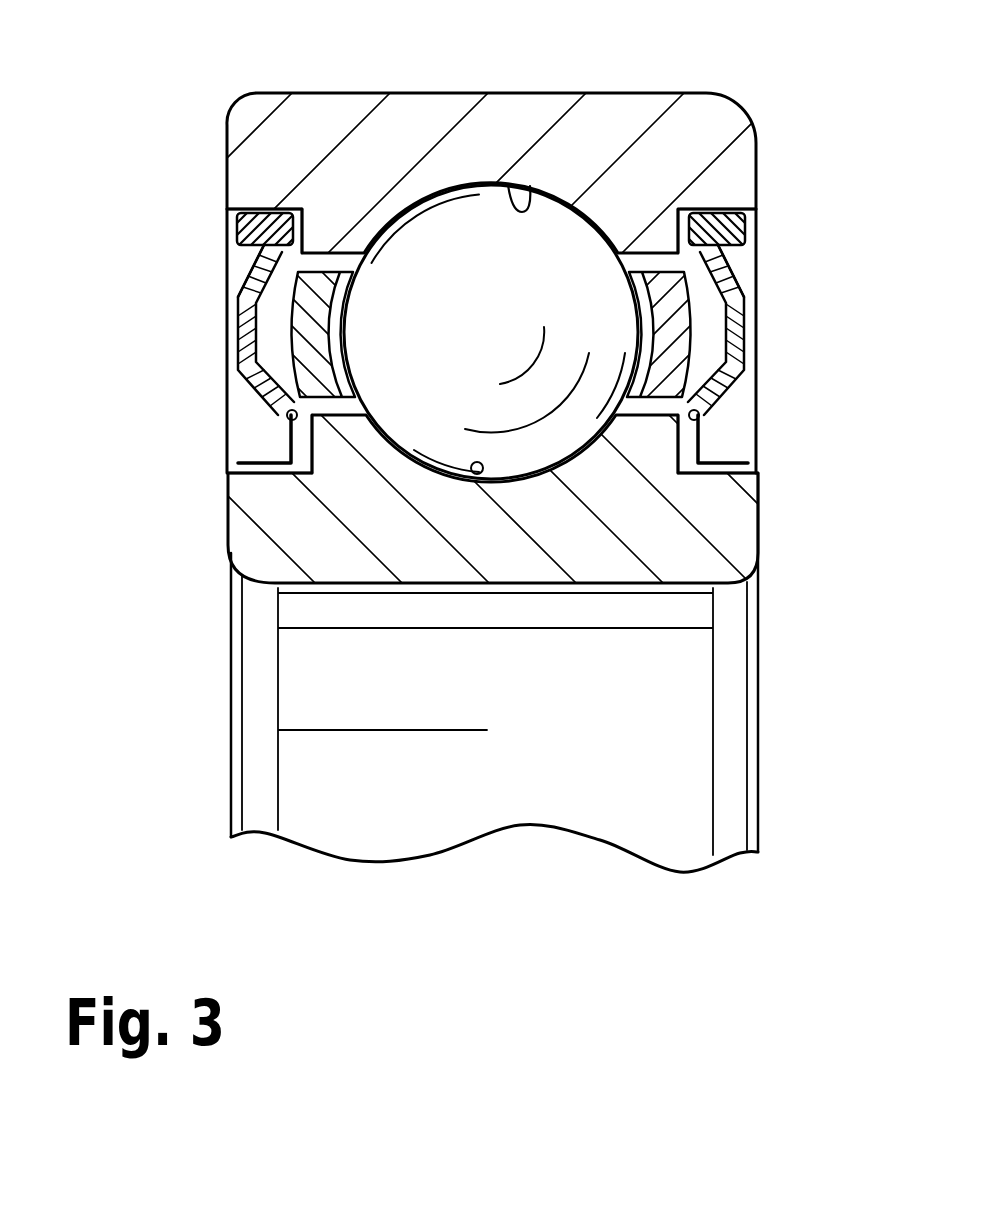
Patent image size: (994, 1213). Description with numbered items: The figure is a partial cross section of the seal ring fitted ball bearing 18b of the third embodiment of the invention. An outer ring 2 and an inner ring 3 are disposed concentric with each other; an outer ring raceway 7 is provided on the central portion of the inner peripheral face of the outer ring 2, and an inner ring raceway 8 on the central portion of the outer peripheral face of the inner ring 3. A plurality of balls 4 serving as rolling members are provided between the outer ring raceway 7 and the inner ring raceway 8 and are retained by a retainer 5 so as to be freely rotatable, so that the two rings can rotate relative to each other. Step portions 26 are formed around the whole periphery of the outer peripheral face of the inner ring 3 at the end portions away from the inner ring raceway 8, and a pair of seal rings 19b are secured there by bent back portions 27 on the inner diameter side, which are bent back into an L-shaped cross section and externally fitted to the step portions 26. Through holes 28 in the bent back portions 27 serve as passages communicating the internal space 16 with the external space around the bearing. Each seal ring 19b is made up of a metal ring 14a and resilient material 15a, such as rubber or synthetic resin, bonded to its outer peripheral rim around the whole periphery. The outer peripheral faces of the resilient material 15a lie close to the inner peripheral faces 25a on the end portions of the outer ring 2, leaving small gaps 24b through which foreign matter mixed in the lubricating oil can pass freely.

The seal ring fitted ball bearing 18b is at (493, 322).
The outer ring 2 is at (494, 253).
The inner ring 3 is at (493, 517).
The balls 4 is at (491, 344).
The retainer 5 is at (494, 322).
The outer ring raceway 7 is at (532, 198).
The inner ring raceway 8 is at (480, 480).
The metal rings 14a is at (267, 291).
The resilient material 15a is at (240, 225).
The space 16 is at (247, 364).
The seal rings 19b is at (245, 368).
The small gaps 24b is at (233, 210).
The inner peripheral faces 25a is at (282, 206).
The step portions 26 is at (270, 480).
The bent back portions 27 is at (243, 470).
The through holes 28 is at (290, 432).